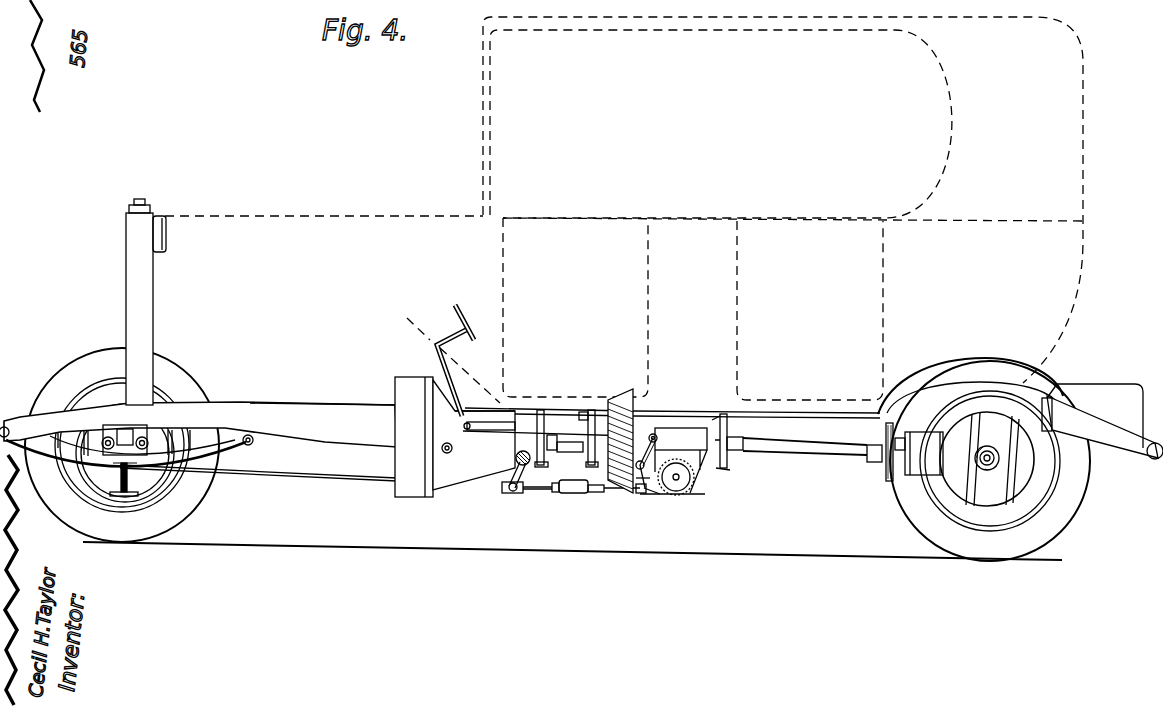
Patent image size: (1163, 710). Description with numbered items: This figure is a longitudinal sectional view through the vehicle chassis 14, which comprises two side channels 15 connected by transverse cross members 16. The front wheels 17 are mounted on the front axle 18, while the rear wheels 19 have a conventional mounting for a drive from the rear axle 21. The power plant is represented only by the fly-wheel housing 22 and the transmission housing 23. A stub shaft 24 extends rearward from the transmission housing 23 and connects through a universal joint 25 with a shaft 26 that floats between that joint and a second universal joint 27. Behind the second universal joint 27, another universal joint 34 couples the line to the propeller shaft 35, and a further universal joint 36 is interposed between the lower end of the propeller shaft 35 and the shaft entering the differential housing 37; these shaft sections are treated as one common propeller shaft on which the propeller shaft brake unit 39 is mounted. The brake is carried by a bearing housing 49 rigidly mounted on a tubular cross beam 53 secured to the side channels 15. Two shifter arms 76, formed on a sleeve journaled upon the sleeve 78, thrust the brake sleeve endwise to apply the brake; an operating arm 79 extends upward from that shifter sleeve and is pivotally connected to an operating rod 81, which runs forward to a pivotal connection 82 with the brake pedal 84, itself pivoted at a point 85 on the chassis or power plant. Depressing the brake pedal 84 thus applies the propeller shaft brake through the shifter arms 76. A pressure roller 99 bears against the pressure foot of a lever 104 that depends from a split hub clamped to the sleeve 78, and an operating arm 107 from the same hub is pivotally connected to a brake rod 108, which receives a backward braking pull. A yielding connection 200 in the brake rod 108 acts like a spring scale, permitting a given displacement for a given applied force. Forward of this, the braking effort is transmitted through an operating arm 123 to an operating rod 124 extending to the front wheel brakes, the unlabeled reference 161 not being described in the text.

The vehicle chassis 14 is at (363, 404).
The side channels 15 is at (256, 409).
The transverse cross members 16 is at (1052, 406).
The front wheels 17 is at (105, 358).
The front axle 18 is at (126, 496).
The rear wheels 19 is at (1072, 482).
The rear axle 21 is at (986, 449).
The fly-wheel housing 22 is at (398, 496).
The transmission housing 23 is at (465, 470).
The stub shaft 24 is at (527, 438).
The universal joint 25 is at (539, 428).
The shaft 26 is at (564, 457).
The second universal joint 27 is at (592, 414).
The universal joint 34 is at (728, 463).
The propeller shaft 35 is at (813, 449).
The universal joint 36 is at (888, 481).
The differential housing 37 is at (940, 470).
The propeller shaft brake unit 39 is at (621, 398).
The bearing housing 49 is at (684, 429).
The tubular strut or cross beam 53 is at (688, 492).
The shifter arms 76 is at (640, 433).
The sleeve 78 is at (525, 467).
The operating arm 79 is at (658, 440).
The operating rod 81 is at (636, 428).
The pivotal connection 82 is at (470, 430).
The brake pedal 84 is at (466, 332).
The pivot point 85 is at (443, 449).
The pressure roller 99 is at (648, 494).
The lever 104 is at (658, 493).
The operating arm or lever 107 is at (639, 493).
The operating rod 108 is at (582, 494).
The operating arm 123 is at (508, 482).
The operating rod 124 is at (336, 481).
The brake drum 161 is at (180, 477).
The yielding connection 200 is at (572, 499).